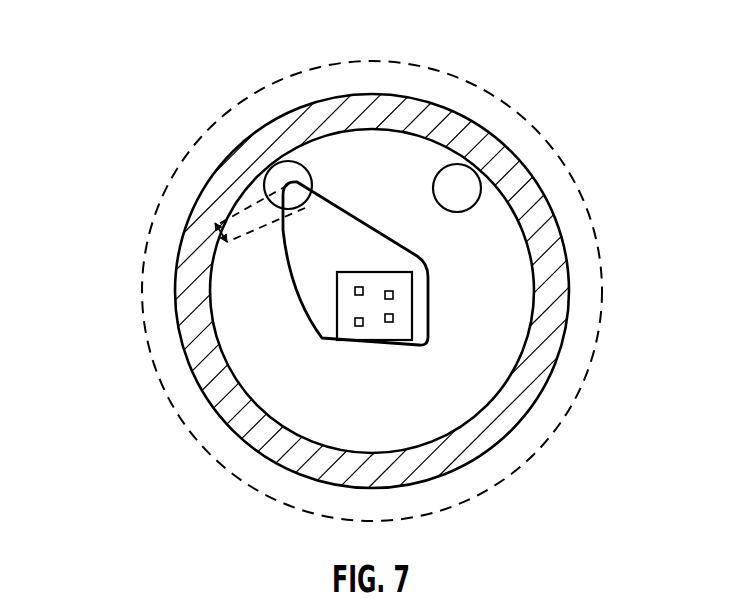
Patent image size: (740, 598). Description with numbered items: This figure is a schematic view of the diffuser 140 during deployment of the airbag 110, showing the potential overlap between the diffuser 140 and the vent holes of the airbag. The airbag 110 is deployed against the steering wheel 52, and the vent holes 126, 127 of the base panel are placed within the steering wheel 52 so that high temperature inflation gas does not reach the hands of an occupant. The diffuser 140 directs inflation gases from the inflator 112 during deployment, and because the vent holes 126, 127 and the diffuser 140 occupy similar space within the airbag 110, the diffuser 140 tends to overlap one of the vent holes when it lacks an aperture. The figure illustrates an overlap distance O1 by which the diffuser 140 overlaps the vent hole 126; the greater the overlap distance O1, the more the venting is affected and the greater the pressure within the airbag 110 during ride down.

The airbag 110 is at (149, 233).
The steering wheel 52 is at (547, 273).
The vent hole 127 is at (262, 188).
The vent hole 126 is at (457, 163).
The diffuser 140 is at (417, 250).
The inflator 112 is at (412, 303).
The overlap distance O1 is at (219, 232).